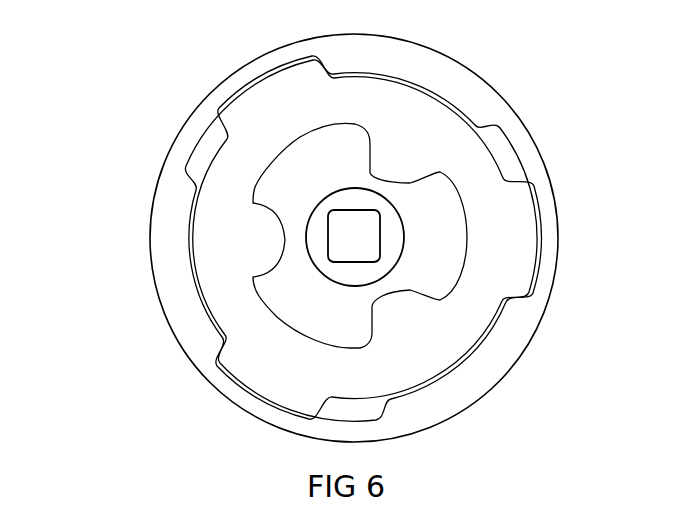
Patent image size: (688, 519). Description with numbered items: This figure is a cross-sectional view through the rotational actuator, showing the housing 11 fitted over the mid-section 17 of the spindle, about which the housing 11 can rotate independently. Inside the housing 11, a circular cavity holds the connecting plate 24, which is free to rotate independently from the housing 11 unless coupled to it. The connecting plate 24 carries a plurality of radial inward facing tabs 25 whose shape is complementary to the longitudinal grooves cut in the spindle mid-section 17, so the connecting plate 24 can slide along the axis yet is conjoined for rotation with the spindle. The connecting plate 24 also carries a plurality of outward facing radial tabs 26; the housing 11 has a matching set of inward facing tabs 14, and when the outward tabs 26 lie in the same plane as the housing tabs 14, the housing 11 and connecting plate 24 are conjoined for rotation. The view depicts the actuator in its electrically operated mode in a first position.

The housing 11 is at (167, 183).
The inward facing tabs 14 is at (188, 277).
The mid-section of spindle 17 is at (293, 290).
The connecting plate 24 is at (415, 130).
The radial inward facing tabs 25 is at (390, 316).
The outward facing radial tabs 26 is at (278, 97).